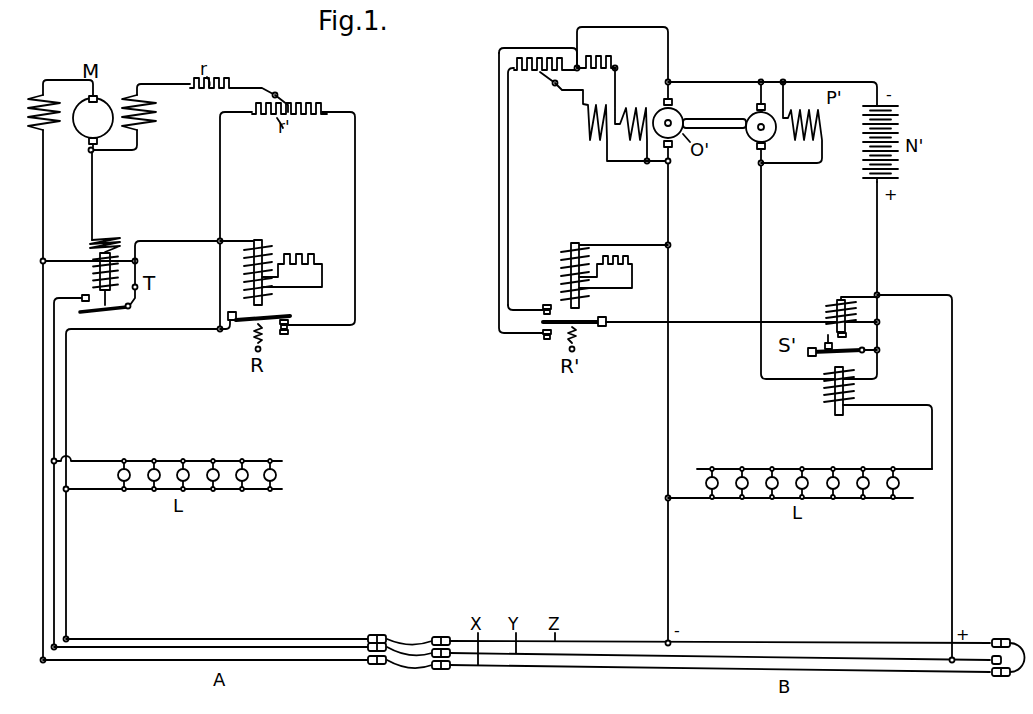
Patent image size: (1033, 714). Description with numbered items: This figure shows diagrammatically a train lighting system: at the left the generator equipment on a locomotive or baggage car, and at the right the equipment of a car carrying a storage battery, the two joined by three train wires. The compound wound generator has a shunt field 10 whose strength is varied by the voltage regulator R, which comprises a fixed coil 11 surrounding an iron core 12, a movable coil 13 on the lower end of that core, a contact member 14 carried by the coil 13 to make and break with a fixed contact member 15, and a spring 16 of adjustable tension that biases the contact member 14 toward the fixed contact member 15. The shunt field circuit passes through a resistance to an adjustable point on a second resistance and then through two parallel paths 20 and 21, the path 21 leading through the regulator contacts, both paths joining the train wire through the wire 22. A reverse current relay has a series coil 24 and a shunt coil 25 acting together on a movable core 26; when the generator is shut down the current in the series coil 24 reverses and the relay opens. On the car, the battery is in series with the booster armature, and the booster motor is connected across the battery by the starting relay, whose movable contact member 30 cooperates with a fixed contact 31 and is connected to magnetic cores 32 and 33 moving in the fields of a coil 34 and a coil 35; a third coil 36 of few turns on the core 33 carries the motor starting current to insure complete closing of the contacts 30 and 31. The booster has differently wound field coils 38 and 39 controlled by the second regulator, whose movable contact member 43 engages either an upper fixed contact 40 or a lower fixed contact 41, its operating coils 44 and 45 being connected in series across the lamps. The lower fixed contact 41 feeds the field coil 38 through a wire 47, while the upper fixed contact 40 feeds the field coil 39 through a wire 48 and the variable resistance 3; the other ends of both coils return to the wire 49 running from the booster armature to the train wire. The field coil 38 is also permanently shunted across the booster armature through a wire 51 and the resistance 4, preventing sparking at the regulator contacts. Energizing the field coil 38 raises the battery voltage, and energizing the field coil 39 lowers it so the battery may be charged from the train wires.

The variable resistance r3 3 is at (538, 58).
The resistance r4 4 is at (606, 58).
The shunt field 10 is at (156, 107).
The fixed coil 11 is at (272, 248).
The iron core 12 is at (258, 240).
The coil 13 is at (272, 302).
The contact member 14 is at (292, 317).
The fixed contact member 15 is at (289, 338).
The spring 16 is at (252, 340).
The parallel path 20 is at (220, 172).
The parallel path 21 is at (355, 168).
The wire 22 is at (66, 415).
The series coil 24 is at (112, 240).
The shunt coil 25 is at (95, 272).
The movable core 26 is at (135, 298).
The movable contact member 30 is at (812, 358).
The fixed contact 31 is at (826, 340).
The magnetic core 32 is at (847, 335).
The magnetic core 33 is at (840, 416).
The coil 34 is at (830, 305).
The coil 35 is at (830, 400).
The third coil 36 is at (848, 373).
The field coil 38 is at (636, 107).
The field coil 39 is at (590, 135).
The upper fixed contact 40 is at (545, 305).
The lower fixed contact 41 is at (546, 340).
The movable contact member 43 is at (592, 326).
The operating coil 44 is at (570, 258).
The operating coil 45 is at (592, 292).
The wire 47 is at (499, 220).
The wire 48 is at (510, 200).
The wire 49 is at (668, 224).
The wire 51 is at (670, 58).